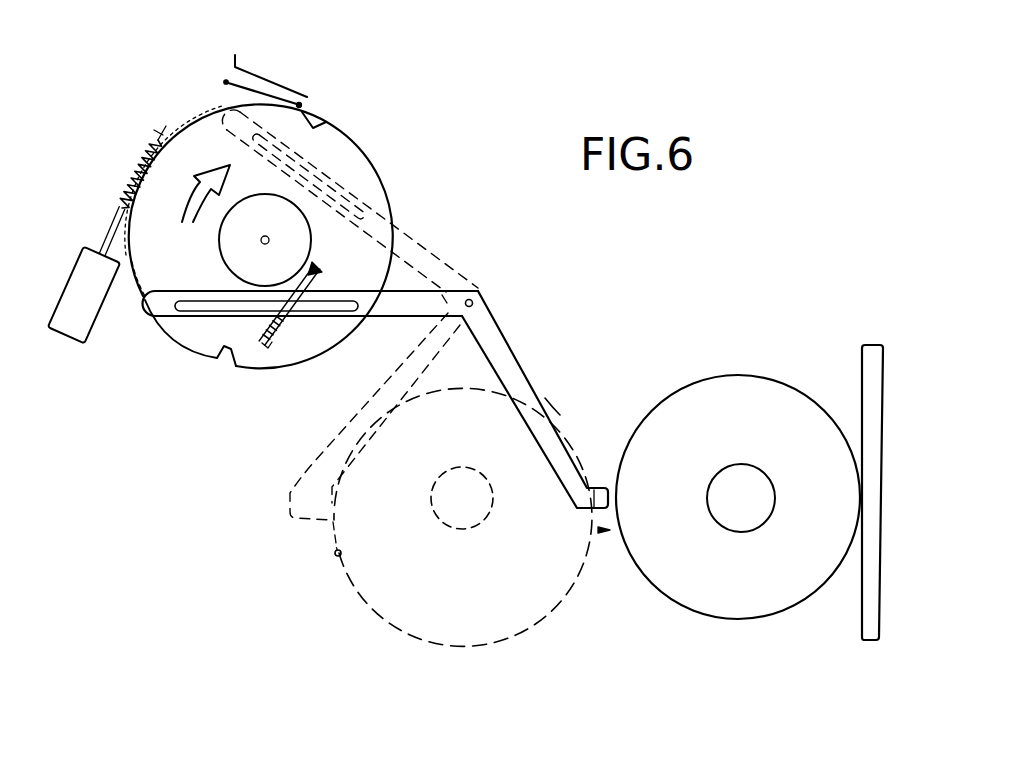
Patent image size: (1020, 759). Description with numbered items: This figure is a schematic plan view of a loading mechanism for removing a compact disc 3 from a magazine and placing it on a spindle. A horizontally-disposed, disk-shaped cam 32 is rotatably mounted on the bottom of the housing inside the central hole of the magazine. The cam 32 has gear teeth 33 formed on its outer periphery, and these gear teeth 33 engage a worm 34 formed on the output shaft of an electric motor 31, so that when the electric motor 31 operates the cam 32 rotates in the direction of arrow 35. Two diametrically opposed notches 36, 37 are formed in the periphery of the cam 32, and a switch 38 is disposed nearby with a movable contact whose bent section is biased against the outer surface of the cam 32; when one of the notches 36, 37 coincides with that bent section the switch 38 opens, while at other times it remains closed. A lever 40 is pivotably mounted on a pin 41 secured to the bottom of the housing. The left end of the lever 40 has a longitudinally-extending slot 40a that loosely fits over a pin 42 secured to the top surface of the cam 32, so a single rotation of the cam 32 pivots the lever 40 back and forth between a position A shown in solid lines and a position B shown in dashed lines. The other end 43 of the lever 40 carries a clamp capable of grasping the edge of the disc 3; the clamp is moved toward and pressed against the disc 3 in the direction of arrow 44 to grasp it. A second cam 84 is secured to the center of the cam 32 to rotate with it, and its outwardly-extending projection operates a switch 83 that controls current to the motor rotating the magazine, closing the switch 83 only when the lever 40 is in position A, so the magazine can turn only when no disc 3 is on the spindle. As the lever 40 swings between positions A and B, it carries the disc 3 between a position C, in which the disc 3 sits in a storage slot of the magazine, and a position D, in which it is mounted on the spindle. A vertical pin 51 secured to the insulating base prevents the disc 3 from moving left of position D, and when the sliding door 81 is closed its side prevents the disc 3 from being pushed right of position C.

The compact disc 3 is at (763, 397).
The electric motor 31 is at (78, 333).
The cam 32 is at (200, 163).
The gear teeth 33 is at (173, 133).
The worm 34 is at (125, 186).
The arrow 35 is at (142, 310).
The notch 36 is at (332, 138).
The notch 37 is at (227, 362).
The switch 38 is at (270, 88).
The lever 40 is at (495, 317).
The slot 40a is at (218, 318).
The pin 41 is at (478, 288).
The pin 42 is at (322, 318).
The other end of the lever 43 is at (597, 489).
The arrow 44 is at (605, 537).
The vertical pin 51 is at (335, 557).
The sliding door 81 is at (875, 352).
The switch 83 is at (277, 343).
The second cam 84 is at (323, 271).
The position A is at (558, 403).
The position B is at (313, 461).
The position C is at (745, 620).
The position D is at (470, 628).